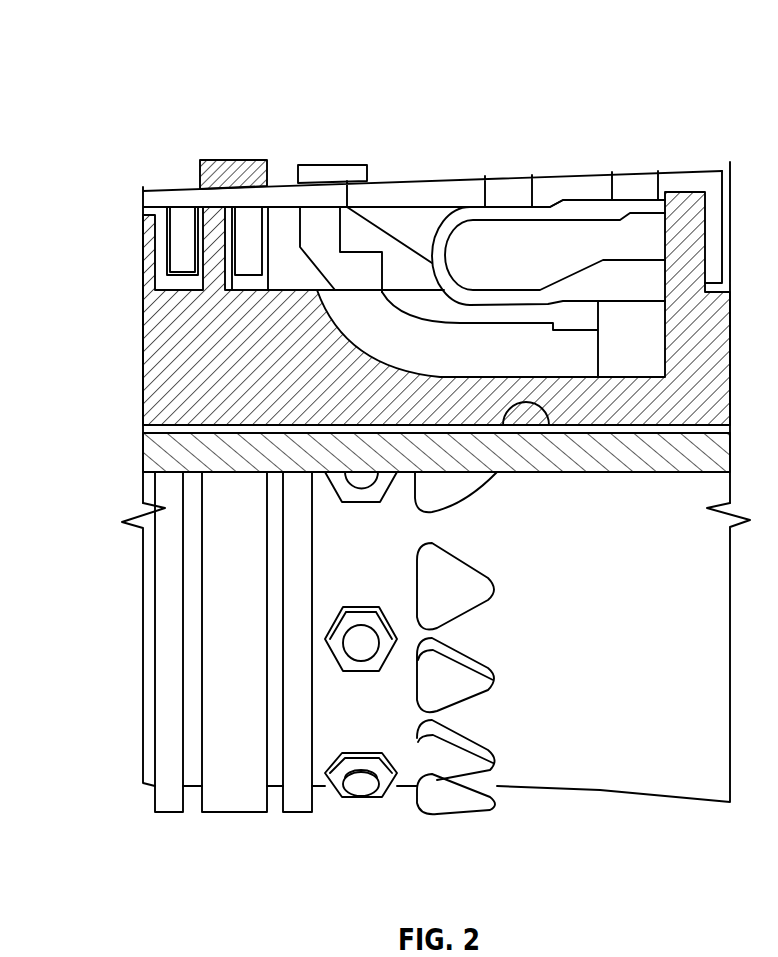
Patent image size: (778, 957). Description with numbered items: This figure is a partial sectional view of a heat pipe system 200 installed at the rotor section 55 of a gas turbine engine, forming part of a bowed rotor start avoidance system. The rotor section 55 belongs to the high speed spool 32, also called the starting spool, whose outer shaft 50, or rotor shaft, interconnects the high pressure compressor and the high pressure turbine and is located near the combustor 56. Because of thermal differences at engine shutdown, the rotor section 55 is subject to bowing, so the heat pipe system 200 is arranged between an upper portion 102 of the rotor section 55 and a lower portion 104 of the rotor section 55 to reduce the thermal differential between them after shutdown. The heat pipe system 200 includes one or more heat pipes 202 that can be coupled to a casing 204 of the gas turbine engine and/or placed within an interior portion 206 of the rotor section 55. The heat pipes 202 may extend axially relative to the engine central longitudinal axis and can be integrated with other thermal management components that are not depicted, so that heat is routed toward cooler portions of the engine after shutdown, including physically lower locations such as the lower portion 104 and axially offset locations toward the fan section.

The rotor section 55 is at (172, 90).
The upper portion 102 is at (230, 128).
The heat pipe 202 is at (215, 159).
The casing 204 is at (162, 189).
The high speed spool 32 is at (237, 337).
The combustor 56 is at (493, 253).
The interior portion 206 is at (123, 353).
The outer shaft 50 is at (549, 425).
The heat pipe system 200 is at (240, 642).
The lower portion 104 is at (233, 820).